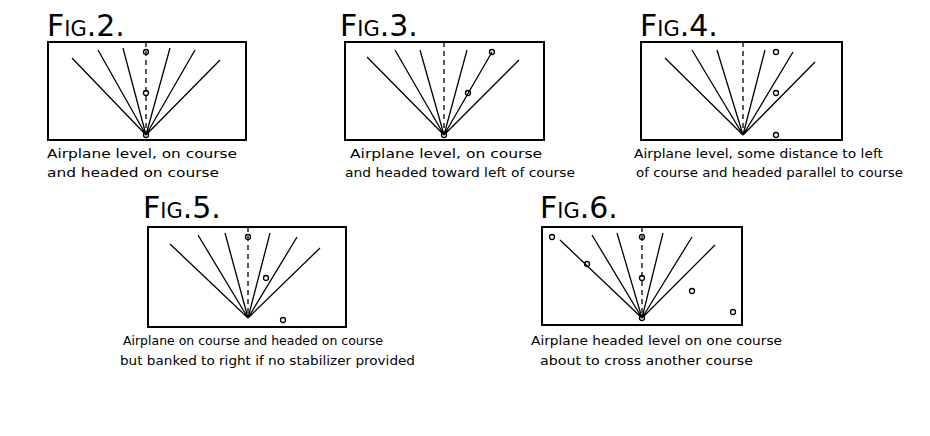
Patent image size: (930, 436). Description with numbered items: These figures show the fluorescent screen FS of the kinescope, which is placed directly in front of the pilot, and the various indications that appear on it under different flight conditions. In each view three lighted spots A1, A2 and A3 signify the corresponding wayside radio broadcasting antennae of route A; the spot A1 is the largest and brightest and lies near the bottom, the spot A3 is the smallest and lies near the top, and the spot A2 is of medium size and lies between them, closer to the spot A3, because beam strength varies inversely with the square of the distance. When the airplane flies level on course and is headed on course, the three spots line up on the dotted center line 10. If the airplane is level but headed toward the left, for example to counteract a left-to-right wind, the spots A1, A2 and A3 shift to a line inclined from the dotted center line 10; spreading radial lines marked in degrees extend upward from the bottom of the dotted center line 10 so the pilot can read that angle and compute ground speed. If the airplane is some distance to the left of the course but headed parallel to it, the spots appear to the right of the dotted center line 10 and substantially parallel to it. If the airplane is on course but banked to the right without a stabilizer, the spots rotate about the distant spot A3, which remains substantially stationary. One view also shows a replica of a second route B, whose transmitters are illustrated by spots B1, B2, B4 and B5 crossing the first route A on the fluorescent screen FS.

In FIG. 2, the fluorescent screen FS is at (57, 83).
In FIG. 3, the fluorescent screen FS is at (355, 83).
In FIG. 4, the fluorescent screen FS is at (653, 83).
In FIG. 5, the fluorescent screen FS is at (157, 269).
In FIG. 6, the fluorescent screen FS is at (548, 268).
In FIG. 2, the dotted center line 10 is at (146, 66).
In FIG. 3, the dotted center line 10 is at (444, 66).
In FIG. 4, the dotted center line 10 is at (743, 66).
In FIG. 5, the dotted center line 10 is at (248, 251).
In FIG. 6, the dotted center line 10 is at (642, 251).
In FIG. 2, the lighted spot A1 is at (149, 134).
In FIG. 3, the lighted spot A1 is at (447, 134).
In FIG. 4, the lighted spot A1 is at (779, 133).
In FIG. 5, the lighted spot A1 is at (286, 319).
In FIG. 6, the lighted spot A1 is at (645, 317).
In FIG. 2, the lighted spot A2 is at (144, 95).
In FIG. 3, the lighted spot A2 is at (470, 95).
In FIG. 4, the lighted spot A2 is at (779, 94).
In FIG. 5, the lighted spot A2 is at (269, 278).
In FIG. 6, the lighted spot A2 is at (645, 277).
In FIG. 2, the lighted spot A3 is at (155, 51).
In FIG. 3, the lighted spot A3 is at (495, 52).
In FIG. 4, the lighted spot A3 is at (779, 52).
In FIG. 5, the lighted spot A3 is at (256, 236).
In FIG. 6, the lighted spot A3 is at (650, 236).
In FIG. 6, the lighted spot B1 is at (730, 312).
In FIG. 6, the lighted spot B2 is at (695, 291).
In FIG. 6, the lighted spot B4 is at (585, 267).
In FIG. 6, the lighted spot B5 is at (561, 237).